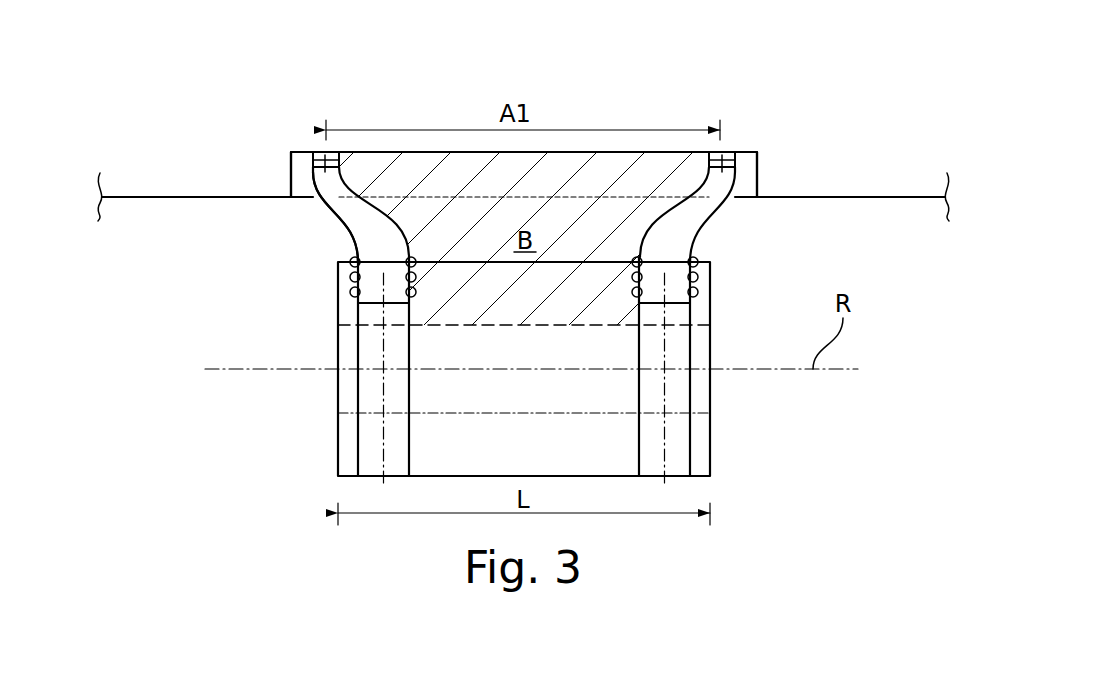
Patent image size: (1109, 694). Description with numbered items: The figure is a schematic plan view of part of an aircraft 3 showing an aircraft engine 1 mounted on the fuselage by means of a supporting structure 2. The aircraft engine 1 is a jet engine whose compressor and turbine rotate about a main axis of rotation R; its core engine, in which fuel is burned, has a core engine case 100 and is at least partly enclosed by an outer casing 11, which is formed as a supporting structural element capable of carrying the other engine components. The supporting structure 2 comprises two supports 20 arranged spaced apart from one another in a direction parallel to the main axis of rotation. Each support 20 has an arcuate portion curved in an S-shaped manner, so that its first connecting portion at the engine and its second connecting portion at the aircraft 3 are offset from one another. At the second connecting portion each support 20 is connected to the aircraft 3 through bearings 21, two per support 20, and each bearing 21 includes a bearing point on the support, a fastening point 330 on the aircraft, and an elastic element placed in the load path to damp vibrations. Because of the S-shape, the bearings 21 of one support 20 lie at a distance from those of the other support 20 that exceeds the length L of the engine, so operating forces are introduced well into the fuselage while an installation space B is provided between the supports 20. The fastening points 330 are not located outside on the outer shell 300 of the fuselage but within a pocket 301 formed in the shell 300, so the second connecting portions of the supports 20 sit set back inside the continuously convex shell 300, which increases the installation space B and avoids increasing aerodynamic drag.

The aircraft engine 1 is at (366, 393).
The supporting structure 2 is at (266, 233).
The aircraft 3 is at (170, 210).
The outer casing 11 is at (710, 441).
The support 20 is at (365, 226).
The bearing 21 is at (306, 162).
The core engine case 100 is at (525, 413).
The outer shell 300 is at (862, 198).
The pocket 301 is at (758, 185).
The fastening point 330 is at (319, 152).